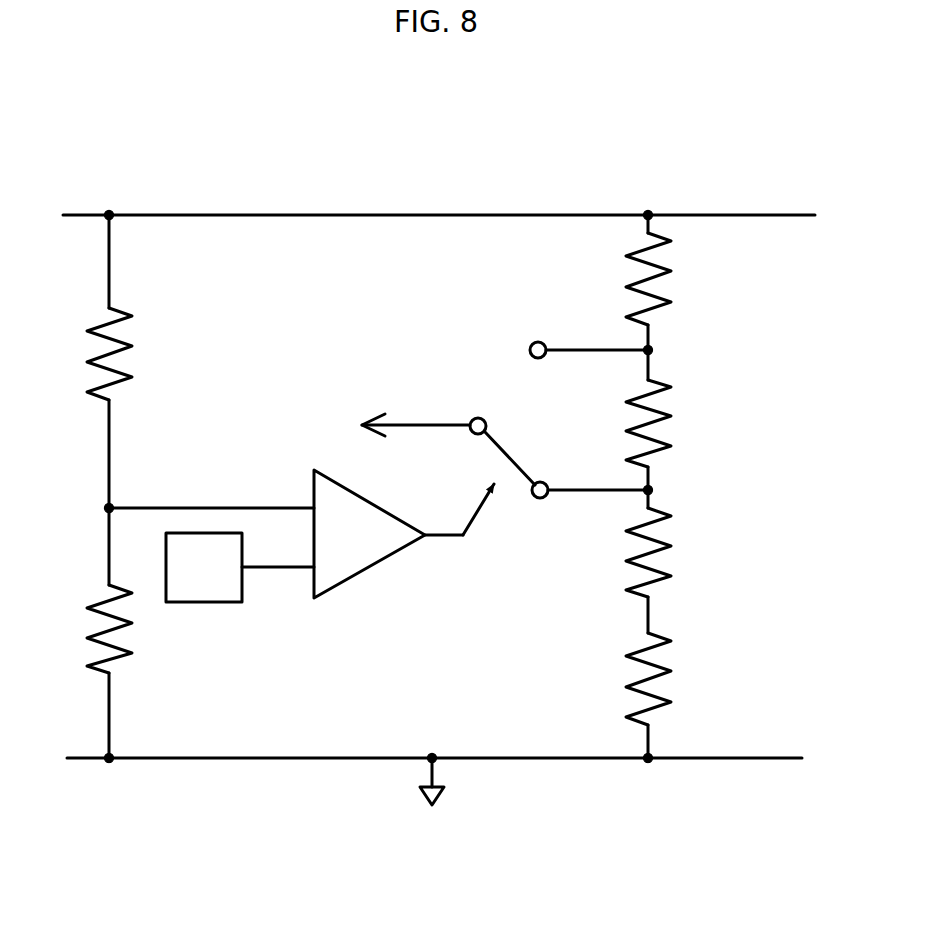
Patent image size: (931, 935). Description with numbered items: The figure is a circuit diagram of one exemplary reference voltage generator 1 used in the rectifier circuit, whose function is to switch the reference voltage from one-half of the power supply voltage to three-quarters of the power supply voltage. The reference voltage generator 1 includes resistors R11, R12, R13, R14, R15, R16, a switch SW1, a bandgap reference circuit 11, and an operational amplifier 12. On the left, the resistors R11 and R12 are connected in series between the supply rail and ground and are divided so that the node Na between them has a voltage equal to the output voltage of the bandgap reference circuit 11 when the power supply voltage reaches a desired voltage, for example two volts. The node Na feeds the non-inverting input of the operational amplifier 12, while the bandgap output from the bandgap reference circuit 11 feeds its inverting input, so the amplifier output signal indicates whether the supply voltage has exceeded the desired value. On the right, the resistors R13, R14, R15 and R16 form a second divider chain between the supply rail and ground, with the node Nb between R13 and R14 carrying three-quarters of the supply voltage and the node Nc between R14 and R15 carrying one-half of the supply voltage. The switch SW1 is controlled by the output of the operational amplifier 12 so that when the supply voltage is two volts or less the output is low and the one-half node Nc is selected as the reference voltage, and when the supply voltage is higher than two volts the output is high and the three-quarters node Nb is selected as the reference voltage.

The reference voltage generator 1 is at (577, 103).
The bandgap reference circuit 11 is at (200, 602).
The operational amplifier 12 is at (375, 566).
The resistor R11 is at (118, 337).
The resistor R12 is at (118, 658).
The resistor R13 is at (660, 262).
The resistor R14 is at (660, 402).
The resistor R15 is at (660, 562).
The resistor R16 is at (660, 690).
The switch SW1 is at (473, 310).
The node Na is at (119, 500).
The node Nb is at (658, 344).
The node Nc is at (658, 484).